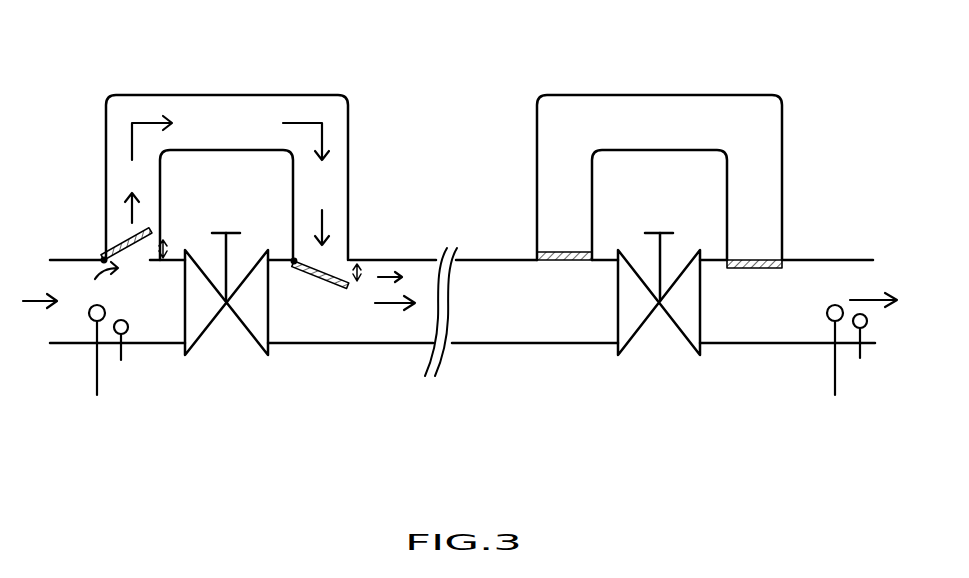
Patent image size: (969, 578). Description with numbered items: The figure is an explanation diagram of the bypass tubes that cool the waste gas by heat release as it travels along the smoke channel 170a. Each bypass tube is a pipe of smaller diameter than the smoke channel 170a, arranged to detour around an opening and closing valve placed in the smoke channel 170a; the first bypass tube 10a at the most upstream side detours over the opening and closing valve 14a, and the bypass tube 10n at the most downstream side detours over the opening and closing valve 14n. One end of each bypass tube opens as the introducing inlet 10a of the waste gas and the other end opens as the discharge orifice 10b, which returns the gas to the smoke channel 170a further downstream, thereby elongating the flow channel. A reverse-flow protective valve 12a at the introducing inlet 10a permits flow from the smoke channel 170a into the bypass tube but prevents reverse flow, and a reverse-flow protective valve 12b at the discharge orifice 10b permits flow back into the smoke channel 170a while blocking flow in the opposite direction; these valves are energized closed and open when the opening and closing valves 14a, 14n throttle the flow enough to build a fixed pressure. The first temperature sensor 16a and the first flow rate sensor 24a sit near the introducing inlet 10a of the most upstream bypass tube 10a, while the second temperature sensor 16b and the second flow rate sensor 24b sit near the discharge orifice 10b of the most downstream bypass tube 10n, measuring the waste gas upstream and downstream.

The introducing inlet 10a is at (248, 95).
The discharge orifice 10b is at (330, 258).
The bypass tube installed at the most downstream side 10n is at (645, 95).
The reverse-flow protective valve 12a is at (112, 250).
The reverse-flow protective valve 12b is at (318, 280).
The opening and closing valve 14a is at (225, 233).
The opening and closing valve 14n is at (660, 233).
The first temperature sensor 16a is at (97, 395).
The second temperature sensor 16b is at (835, 372).
The first flow rate sensor 24a is at (122, 360).
The second flow rate sensor 24b is at (862, 350).
The smoke channel 170a is at (360, 343).